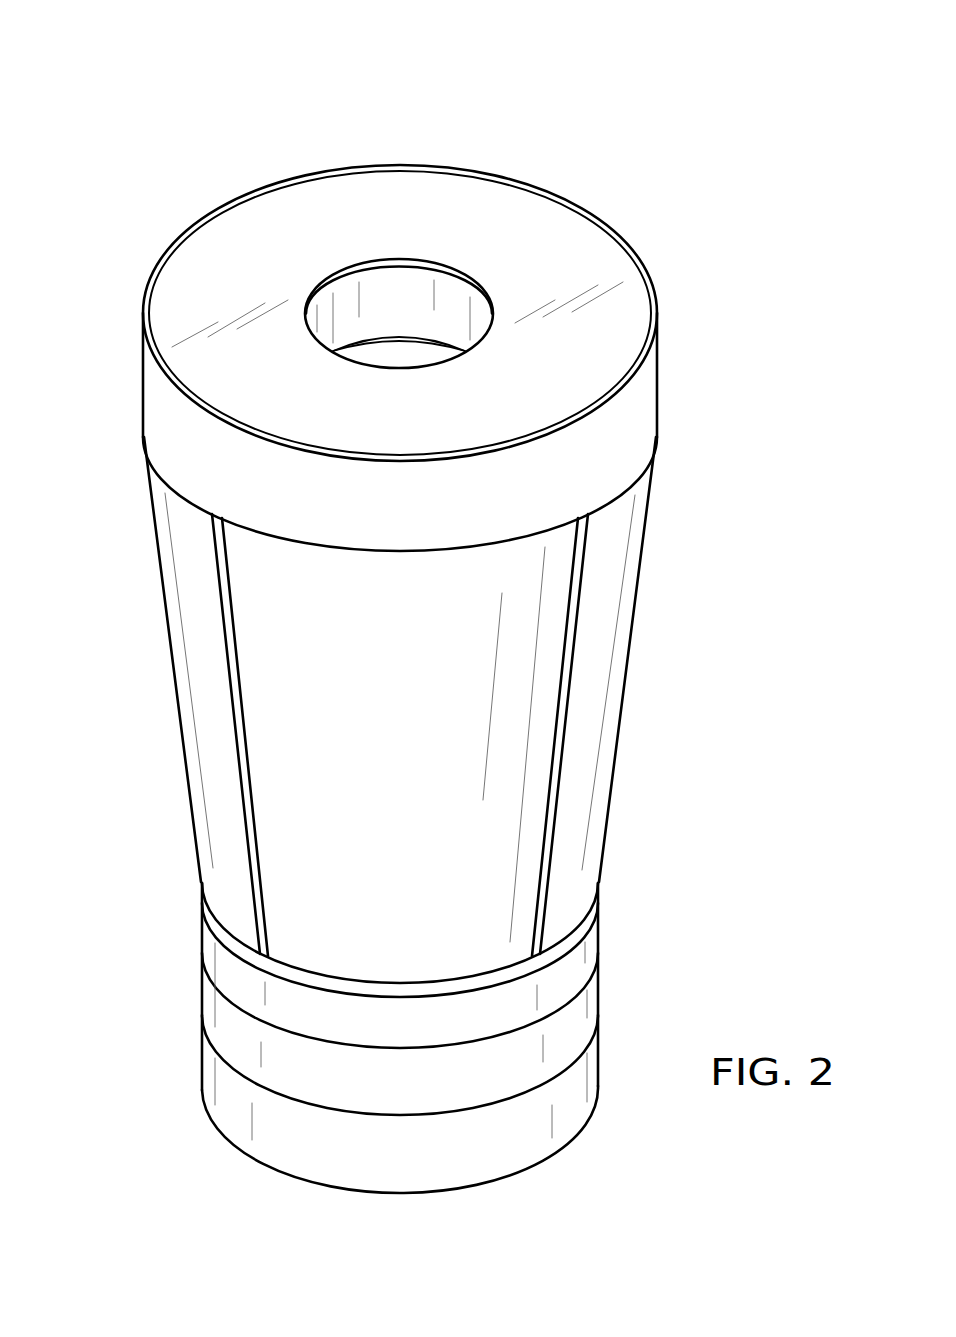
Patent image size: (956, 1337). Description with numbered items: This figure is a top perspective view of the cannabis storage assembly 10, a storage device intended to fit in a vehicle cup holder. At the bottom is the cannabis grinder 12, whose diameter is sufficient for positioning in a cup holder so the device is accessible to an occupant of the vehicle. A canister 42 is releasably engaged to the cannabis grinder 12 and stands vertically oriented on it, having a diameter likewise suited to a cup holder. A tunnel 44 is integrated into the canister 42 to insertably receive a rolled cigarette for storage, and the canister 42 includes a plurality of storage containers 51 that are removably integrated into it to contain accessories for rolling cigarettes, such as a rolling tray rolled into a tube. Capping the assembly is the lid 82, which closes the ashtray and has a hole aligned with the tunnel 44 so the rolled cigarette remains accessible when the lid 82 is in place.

The cannabis storage assembly 10 is at (401, 613).
The cannabis grinder 12 is at (625, 994).
The canister 42 is at (655, 662).
The tunnel 44 is at (393, 306).
The storage containers 51 is at (295, 799).
The lid 82 is at (463, 220).